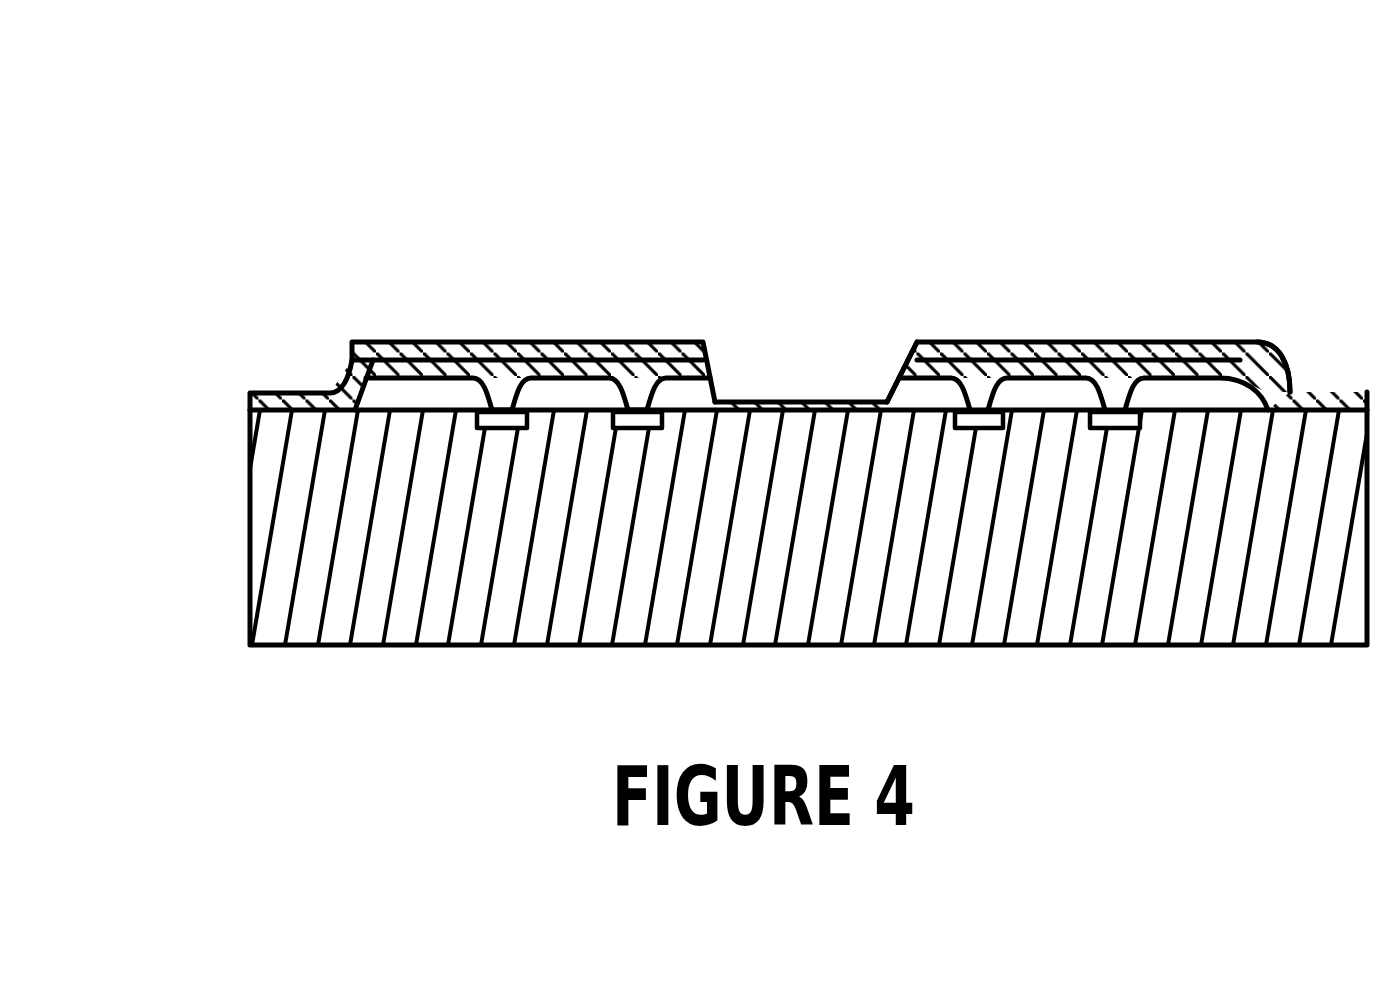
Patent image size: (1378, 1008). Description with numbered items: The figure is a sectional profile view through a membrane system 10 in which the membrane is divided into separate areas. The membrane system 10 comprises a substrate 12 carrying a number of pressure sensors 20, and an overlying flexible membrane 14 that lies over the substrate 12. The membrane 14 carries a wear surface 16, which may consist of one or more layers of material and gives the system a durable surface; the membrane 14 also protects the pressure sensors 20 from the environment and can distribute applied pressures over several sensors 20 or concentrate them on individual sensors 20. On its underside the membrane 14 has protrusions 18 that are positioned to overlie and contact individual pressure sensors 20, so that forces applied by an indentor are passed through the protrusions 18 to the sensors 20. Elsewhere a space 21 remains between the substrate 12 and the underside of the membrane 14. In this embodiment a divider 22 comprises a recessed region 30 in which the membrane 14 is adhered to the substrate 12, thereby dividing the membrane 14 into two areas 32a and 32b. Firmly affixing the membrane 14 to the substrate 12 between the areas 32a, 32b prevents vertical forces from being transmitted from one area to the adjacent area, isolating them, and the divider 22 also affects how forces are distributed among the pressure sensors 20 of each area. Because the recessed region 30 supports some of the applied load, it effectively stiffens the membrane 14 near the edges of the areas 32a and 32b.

The membrane system 10 is at (548, 177).
The substrate 12 is at (303, 588).
The flexible membrane 14 is at (336, 386).
The wear surface 16 is at (695, 343).
The protrusions 18 is at (622, 400).
The pressure sensors 20 is at (640, 433).
The space 21 is at (1218, 385).
The divider 22 is at (830, 377).
The recessed region 30 is at (884, 402).
The first area 32a is at (646, 335).
The second area 32b is at (1101, 338).